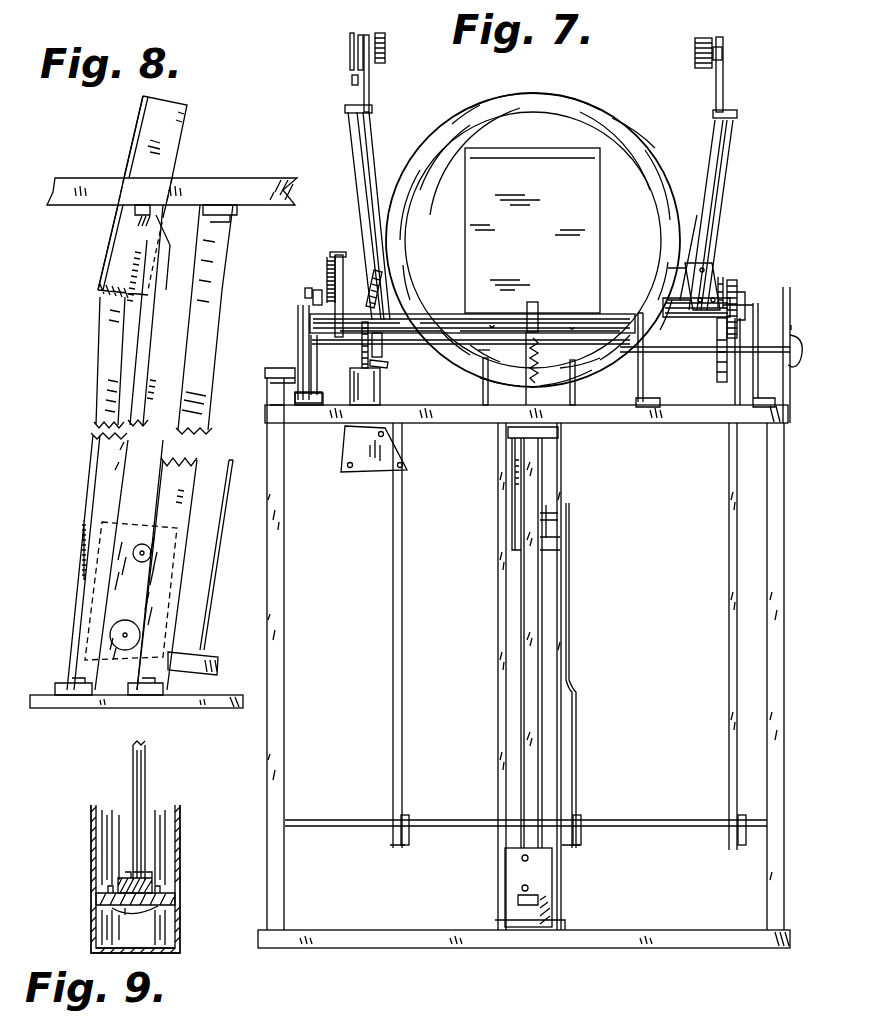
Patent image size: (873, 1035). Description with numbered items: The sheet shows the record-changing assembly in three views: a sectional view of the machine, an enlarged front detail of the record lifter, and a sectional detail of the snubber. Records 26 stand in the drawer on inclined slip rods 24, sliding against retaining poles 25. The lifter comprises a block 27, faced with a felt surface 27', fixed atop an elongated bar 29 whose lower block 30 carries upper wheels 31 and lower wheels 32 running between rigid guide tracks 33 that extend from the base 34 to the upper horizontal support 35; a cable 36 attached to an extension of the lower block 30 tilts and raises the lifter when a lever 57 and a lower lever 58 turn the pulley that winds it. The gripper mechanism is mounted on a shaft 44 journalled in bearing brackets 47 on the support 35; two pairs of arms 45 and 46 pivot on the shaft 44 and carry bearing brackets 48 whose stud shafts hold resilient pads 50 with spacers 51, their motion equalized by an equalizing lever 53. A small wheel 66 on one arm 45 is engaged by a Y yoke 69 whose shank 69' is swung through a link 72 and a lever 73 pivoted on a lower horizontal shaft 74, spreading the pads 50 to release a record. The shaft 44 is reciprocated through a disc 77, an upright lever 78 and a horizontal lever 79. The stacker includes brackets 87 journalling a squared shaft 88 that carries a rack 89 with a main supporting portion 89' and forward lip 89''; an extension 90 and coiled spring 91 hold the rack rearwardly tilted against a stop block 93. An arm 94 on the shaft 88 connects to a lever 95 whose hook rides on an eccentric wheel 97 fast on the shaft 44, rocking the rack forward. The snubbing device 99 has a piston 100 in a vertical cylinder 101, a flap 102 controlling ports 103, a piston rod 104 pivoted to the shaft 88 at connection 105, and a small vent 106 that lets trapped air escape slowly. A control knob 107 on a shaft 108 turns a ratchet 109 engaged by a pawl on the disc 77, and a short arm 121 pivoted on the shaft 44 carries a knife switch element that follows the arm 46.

In FIG. 7, the slip rods 24 is at (484, 351).
In FIG. 7, the retaining poles 25 is at (483, 398).
In FIG. 7, the record 26 is at (508, 102).
In FIG. 8, the block 27 is at (154, 197).
In FIG. 8, the felt or protective surface 27' is at (117, 193).
In FIG. 7, the elongated bar 29 is at (530, 740).
In FIG. 8, the elongated bar 29 is at (157, 282).
In FIG. 7, the lower block 30 is at (545, 905).
In FIG. 8, the lower block 30 is at (130, 524).
In FIG. 8, the upper wheels 31 is at (144, 552).
In FIG. 8, the lower wheels 32 is at (124, 640).
In FIG. 7, the guide tracks 33 is at (563, 630).
In FIG. 8, the guide tracks 33 is at (132, 418).
In FIG. 7, the base 34 is at (612, 940).
In FIG. 8, the base 34 is at (65, 708).
In FIG. 7, the upper horizontal support 35 is at (625, 423).
In FIG. 8, the upper horizontal support 35 is at (210, 180).
In FIG. 8, the cable 36 is at (228, 510).
In FIG. 7, the shaft 44 is at (680, 284).
In FIG. 7, the arms 45 is at (366, 130).
In FIG. 7, the arms 46 is at (351, 134).
In FIG. 7, the bearing brackets 47 is at (311, 345).
In FIG. 7, the bearing brackets 48 is at (369, 88).
In FIG. 7, the resilient discs or pads 50 is at (385, 40).
In FIG. 7, the spacers 51 is at (722, 48).
In FIG. 7, the equalizing lever 53 is at (696, 215).
In FIG. 7, the lever 57 is at (576, 738).
In FIG. 7, the lower lever 58 is at (576, 845).
In FIG. 7, the small wheel 66 is at (388, 364).
In FIG. 7, the Y yoke 69 is at (359, 265).
In FIG. 7, the shank 69' is at (359, 449).
In FIG. 7, the link 72 is at (402, 650).
In FIG. 7, the lever 73 is at (409, 838).
In FIG. 7, the lower horizontal shaft 74 is at (685, 828).
In FIG. 7, the disc 77 is at (737, 284).
In FIG. 7, the lever 78 is at (729, 585).
In FIG. 7, the lever 79 is at (742, 815).
In FIG. 7, the brackets 87 is at (300, 328).
In FIG. 7, the squared shaft 88 is at (470, 334).
In FIG. 7, the rack 89 is at (507, 230).
In FIG. 7, the main supporting portion 89' is at (530, 206).
In FIG. 7, the forward lip 89'' is at (499, 361).
In FIG. 7, the extension 90 is at (538, 308).
In FIG. 7, the coiled spring 91 is at (520, 388).
In FIG. 7, the upstanding block 93 is at (532, 390).
In FIG. 7, the arm 94 is at (335, 278).
In FIG. 7, the lever 95 is at (330, 256).
In FIG. 7, the wheel 97 is at (305, 292).
In FIG. 7, the snubbing device 99 is at (380, 388).
In FIG. 9, the snubbing device 99 is at (88, 882).
In FIG. 9, the piston 100 is at (114, 878).
In FIG. 9, the cylinder 101 is at (180, 828).
In FIG. 9, the flap 102 is at (136, 912).
In FIG. 9, the ports 103 is at (110, 892).
In FIG. 7, the piston rod 104 is at (363, 344).
In FIG. 9, the piston rod 104 is at (133, 760).
In FIG. 7, the pivotal connection 105 is at (412, 325).
In FIG. 9, the vent 106 is at (180, 940).
In FIG. 7, the control knob 107 is at (785, 368).
In FIG. 7, the shaft 108 is at (700, 352).
In FIG. 7, the ratchet 109 is at (717, 362).
In FIG. 7, the arm 121 is at (740, 262).